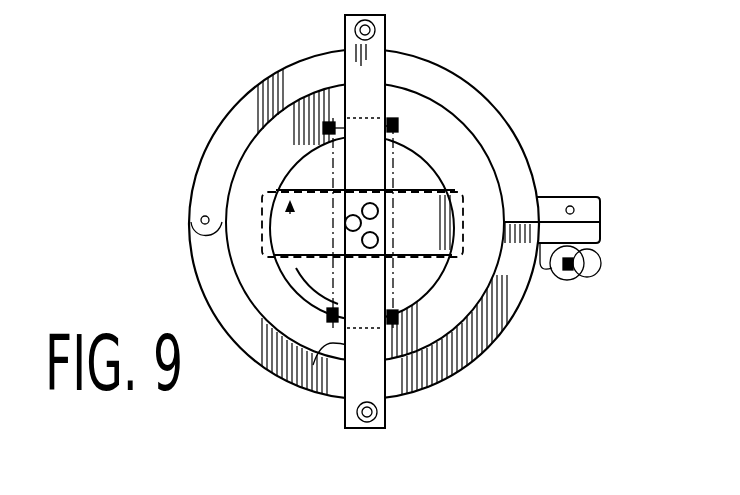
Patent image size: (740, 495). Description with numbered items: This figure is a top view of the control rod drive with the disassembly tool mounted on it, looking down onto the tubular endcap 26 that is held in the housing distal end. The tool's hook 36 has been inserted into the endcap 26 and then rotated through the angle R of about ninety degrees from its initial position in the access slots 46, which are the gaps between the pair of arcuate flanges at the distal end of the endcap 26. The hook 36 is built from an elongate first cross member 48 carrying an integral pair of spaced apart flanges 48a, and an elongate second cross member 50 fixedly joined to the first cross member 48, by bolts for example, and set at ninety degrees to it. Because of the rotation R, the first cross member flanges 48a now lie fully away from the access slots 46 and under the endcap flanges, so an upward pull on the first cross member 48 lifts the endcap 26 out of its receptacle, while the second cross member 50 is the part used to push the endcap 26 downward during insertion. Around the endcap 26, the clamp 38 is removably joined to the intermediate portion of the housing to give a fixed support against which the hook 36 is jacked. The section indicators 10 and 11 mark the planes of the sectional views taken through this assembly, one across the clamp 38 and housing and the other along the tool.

The section line 10- 10 is at (188, 220).
The section line 11- 11 is at (432, 428).
The endcap 26 is at (488, 124).
The hook 36 is at (404, 348).
The clamp 38 is at (539, 184).
The access slots 46 is at (396, 105).
The first cross member 48 is at (417, 233).
The first cross member flanges 48a is at (262, 197).
The second cross member 50 is at (307, 391).
The angle R is at (298, 270).